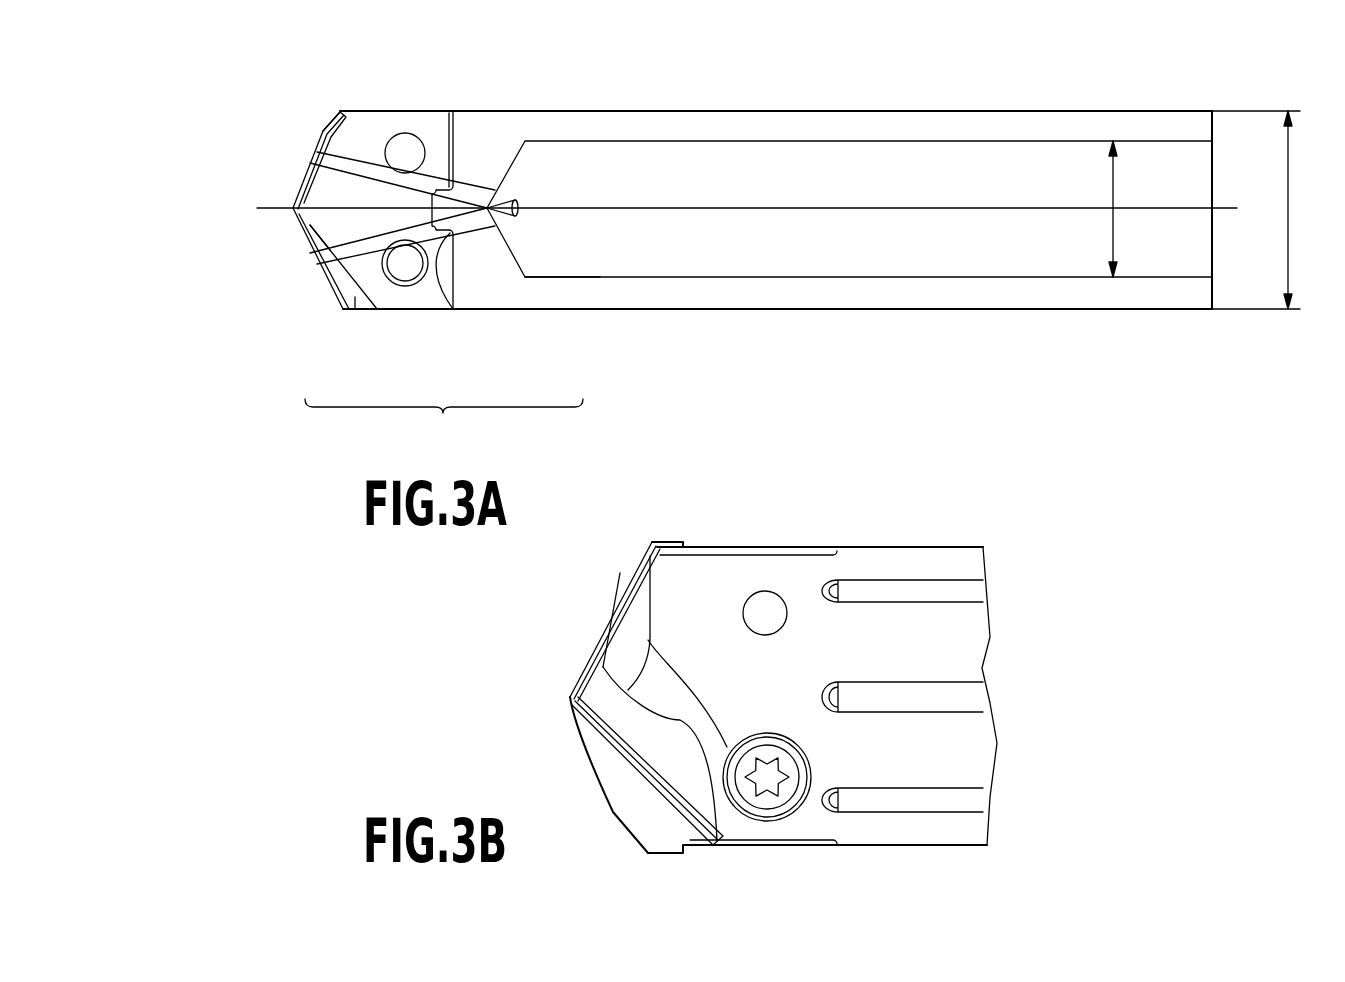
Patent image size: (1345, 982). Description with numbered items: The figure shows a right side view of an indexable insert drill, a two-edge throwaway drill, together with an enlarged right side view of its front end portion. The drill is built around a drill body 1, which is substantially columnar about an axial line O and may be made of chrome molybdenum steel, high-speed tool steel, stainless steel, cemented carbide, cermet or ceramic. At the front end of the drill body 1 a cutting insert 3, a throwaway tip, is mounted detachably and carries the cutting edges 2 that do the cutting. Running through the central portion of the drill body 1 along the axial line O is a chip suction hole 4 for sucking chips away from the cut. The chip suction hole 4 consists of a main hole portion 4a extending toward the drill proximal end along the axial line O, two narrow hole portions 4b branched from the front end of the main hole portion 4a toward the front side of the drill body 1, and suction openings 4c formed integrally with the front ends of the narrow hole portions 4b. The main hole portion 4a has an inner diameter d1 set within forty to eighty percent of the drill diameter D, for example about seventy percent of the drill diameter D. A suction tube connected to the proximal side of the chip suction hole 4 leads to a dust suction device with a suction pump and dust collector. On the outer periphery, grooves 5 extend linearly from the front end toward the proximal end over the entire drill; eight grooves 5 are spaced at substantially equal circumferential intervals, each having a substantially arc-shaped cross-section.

In FIG. 3A, the drill body 1 is at (847, 309).
In FIG. 3A, the cutting edges 2 is at (309, 172).
In FIG. 3B, the cutting edges 2 is at (592, 636).
In FIG. 3A, the cutting insert 3 is at (310, 245).
In FIG. 3B, the cutting insert 3 is at (645, 835).
In FIG. 3A, the chip suction hole 4 is at (444, 425).
In FIG. 3A, the main hole portion 4a is at (549, 277).
In FIG. 3A, the narrow hole portions 4b is at (452, 309).
In FIG. 3A, the suction openings 4c is at (303, 147).
In FIG. 3B, the suction openings 4c is at (675, 722).
In FIG. 3B, the grooves 5 is at (913, 602).
In FIG. 3A, the inner diameter d1 is at (1133, 209).
In FIG. 3A, the drill diameter D is at (1264, 210).
In FIG. 3A, the axial line O is at (1254, 207).